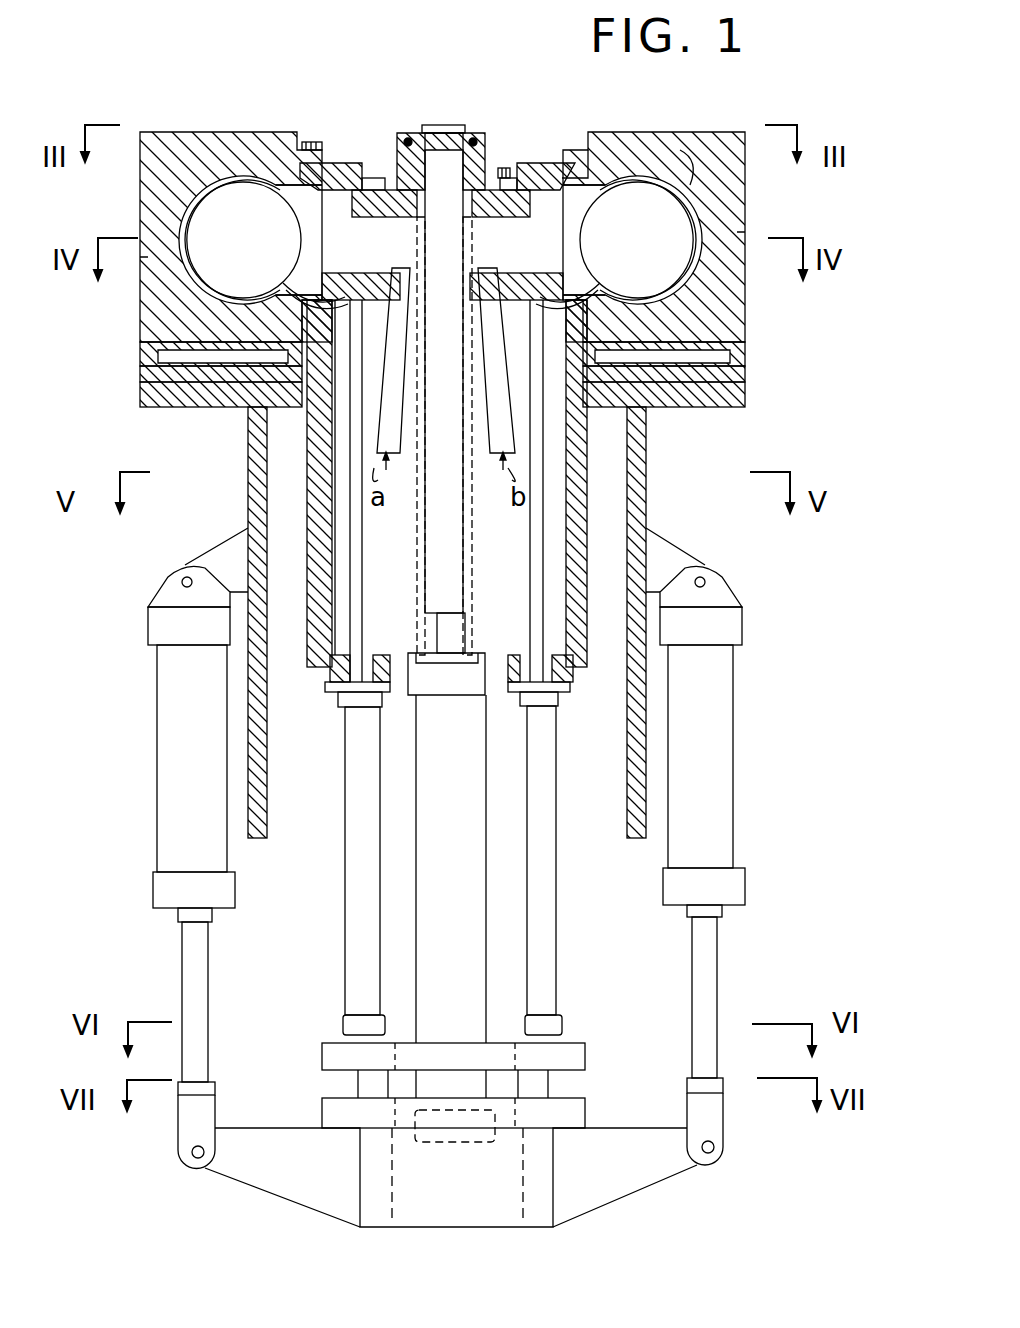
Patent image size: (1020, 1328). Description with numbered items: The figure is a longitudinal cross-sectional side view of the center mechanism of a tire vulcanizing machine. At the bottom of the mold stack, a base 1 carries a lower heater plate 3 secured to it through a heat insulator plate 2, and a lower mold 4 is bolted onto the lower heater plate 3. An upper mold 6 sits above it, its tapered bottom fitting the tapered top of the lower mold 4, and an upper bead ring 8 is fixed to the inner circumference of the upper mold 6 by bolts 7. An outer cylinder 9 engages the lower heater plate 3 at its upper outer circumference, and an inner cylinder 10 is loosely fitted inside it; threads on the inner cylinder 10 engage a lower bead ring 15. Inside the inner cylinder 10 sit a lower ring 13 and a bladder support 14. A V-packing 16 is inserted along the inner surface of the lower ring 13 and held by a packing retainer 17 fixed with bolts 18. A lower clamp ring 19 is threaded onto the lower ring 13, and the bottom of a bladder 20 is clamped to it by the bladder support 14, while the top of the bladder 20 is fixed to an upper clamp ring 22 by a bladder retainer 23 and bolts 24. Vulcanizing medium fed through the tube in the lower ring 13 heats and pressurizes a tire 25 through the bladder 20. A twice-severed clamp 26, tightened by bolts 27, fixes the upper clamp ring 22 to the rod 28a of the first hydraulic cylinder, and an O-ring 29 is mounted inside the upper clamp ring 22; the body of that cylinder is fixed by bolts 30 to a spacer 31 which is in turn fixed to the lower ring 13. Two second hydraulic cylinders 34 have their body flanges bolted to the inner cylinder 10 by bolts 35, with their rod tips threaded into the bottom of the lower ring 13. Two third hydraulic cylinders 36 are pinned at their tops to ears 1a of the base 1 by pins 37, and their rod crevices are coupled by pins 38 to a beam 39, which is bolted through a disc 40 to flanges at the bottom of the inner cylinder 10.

The base 1 is at (740, 408).
The ears 1a is at (234, 546).
The heat insulator plate 2 is at (745, 380).
The lower heater plate 3 is at (745, 348).
The lower mold 4 is at (732, 300).
The upper mold 6 is at (728, 194).
The bolts 7 is at (312, 142).
The upper bead ring 8 is at (342, 164).
The outer cylinder 9 is at (582, 602).
The inner cylinder 10 is at (566, 686).
The lower ring 13 is at (366, 272).
The bladder support 14 is at (301, 275).
The lower bead ring 15 is at (585, 278).
The V-packing 16 is at (442, 298).
The packing retainer 17 is at (402, 268).
The bolts 18 is at (497, 276).
The lower clamp ring 19 is at (548, 276).
The bladder 20 is at (440, 240).
The upper clamp ring 22 is at (440, 240).
The bladder retainer 23 is at (382, 178).
The bolts 24 is at (539, 164).
The tire 25 is at (688, 182).
The twice-severed clamp 26 is at (474, 136).
The bolts 27 is at (498, 168).
The rod 28a is at (436, 122).
The O-ring 29 is at (494, 210).
The bolts 30 is at (410, 650).
The spacer 31 is at (418, 578).
The second hydraulic cylinders 34 is at (342, 916).
The bolts 35 is at (328, 694).
The third hydraulic cylinders 36 is at (156, 750).
The pins 37 is at (172, 579).
The pins 38 is at (178, 1160).
The beam 39 is at (664, 1185).
The disc 40 is at (590, 1062).